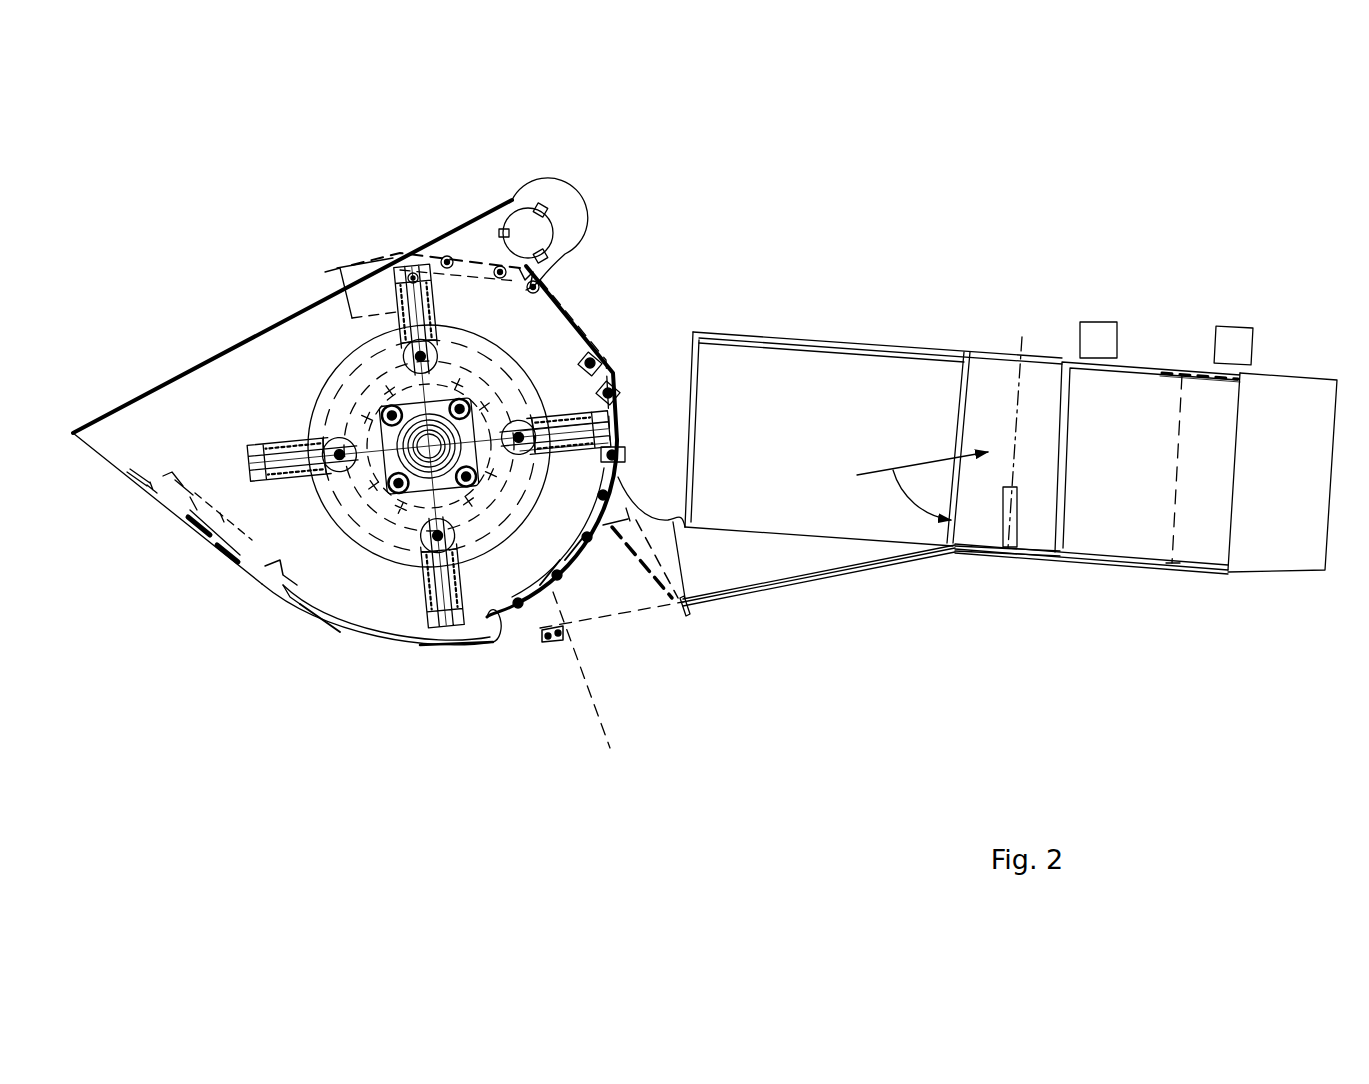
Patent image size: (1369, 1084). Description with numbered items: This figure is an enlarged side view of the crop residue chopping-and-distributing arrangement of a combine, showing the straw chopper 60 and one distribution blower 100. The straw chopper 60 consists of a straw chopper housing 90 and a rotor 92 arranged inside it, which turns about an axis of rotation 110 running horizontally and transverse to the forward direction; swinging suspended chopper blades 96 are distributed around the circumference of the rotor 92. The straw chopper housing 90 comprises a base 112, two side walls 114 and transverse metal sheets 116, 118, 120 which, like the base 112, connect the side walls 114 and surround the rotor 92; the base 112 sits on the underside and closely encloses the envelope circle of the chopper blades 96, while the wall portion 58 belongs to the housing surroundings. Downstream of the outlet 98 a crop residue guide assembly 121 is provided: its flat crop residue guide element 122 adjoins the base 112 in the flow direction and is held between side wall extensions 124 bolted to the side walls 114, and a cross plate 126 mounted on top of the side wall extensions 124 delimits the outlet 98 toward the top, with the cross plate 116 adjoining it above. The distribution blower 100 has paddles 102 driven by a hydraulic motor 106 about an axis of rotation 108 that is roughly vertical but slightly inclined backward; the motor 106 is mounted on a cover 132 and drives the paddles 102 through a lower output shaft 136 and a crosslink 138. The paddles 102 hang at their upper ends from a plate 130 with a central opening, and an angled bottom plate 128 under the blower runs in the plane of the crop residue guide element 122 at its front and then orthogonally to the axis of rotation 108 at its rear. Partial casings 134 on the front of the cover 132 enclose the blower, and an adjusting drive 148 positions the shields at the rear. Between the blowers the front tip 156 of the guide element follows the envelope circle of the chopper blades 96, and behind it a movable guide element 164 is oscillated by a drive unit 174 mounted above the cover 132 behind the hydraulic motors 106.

The housing upper wall 58 is at (228, 396).
The straw chopper 60 is at (444, 692).
The straw chopper housing 90 is at (258, 590).
The rotor 92 is at (466, 365).
The chopper blades 96 is at (575, 418).
The outlet 98 is at (594, 687).
The distribution blower 100 is at (1101, 600).
The paddles 102 is at (1135, 483).
The hydraulic motor 106 is at (1037, 468).
The axis of rotation 108 is at (1012, 450).
The axis of rotation 110 is at (422, 483).
The base 112 is at (463, 643).
The side walls 114 is at (250, 385).
The cross plate 116 is at (618, 397).
The transverse metal sheet 118 is at (542, 380).
The transverse metal sheet 120 is at (195, 527).
The crop residue guide assembly 121 is at (640, 620).
The crop residue guide element 122 is at (625, 612).
The side wall extensions 124 is at (574, 595).
The cross plate 126 is at (604, 500).
The bottom plate 128 is at (880, 567).
The plate 130 is at (1155, 372).
The cover 132 is at (787, 337).
The partial casings 134 is at (686, 372).
The output shaft 136 is at (1012, 527).
The crosslink 138 is at (978, 548).
The adjusting drive 148 is at (1098, 338).
The front tip 156 is at (578, 573).
The movable guide element 164 is at (1295, 392).
The drive unit 174 is at (1233, 343).